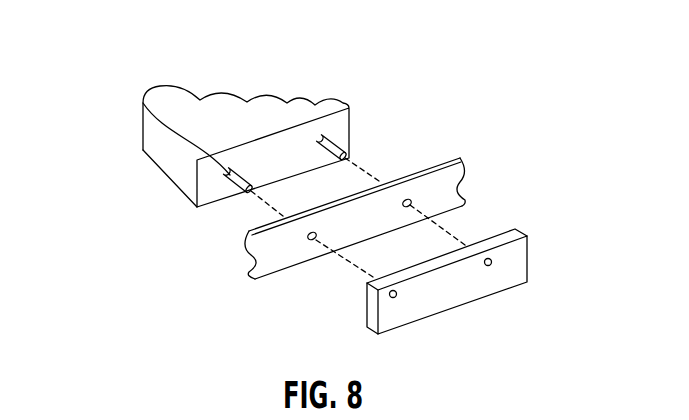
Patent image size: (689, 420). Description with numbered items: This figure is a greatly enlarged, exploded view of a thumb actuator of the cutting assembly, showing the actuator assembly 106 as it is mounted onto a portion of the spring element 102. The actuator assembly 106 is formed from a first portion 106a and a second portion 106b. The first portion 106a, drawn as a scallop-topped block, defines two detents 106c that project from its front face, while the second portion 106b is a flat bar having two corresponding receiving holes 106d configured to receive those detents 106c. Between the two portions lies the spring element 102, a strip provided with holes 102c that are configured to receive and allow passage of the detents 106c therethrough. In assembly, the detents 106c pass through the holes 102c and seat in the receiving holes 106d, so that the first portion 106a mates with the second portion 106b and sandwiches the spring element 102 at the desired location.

The actuator assembly 106 is at (126, 43).
The first portion 106a is at (258, 117).
The second portion 106b is at (445, 288).
The detents 106c is at (150, 115).
The receiving holes 106d is at (397, 297).
The spring element 102 is at (430, 180).
The holes 102c is at (312, 240).